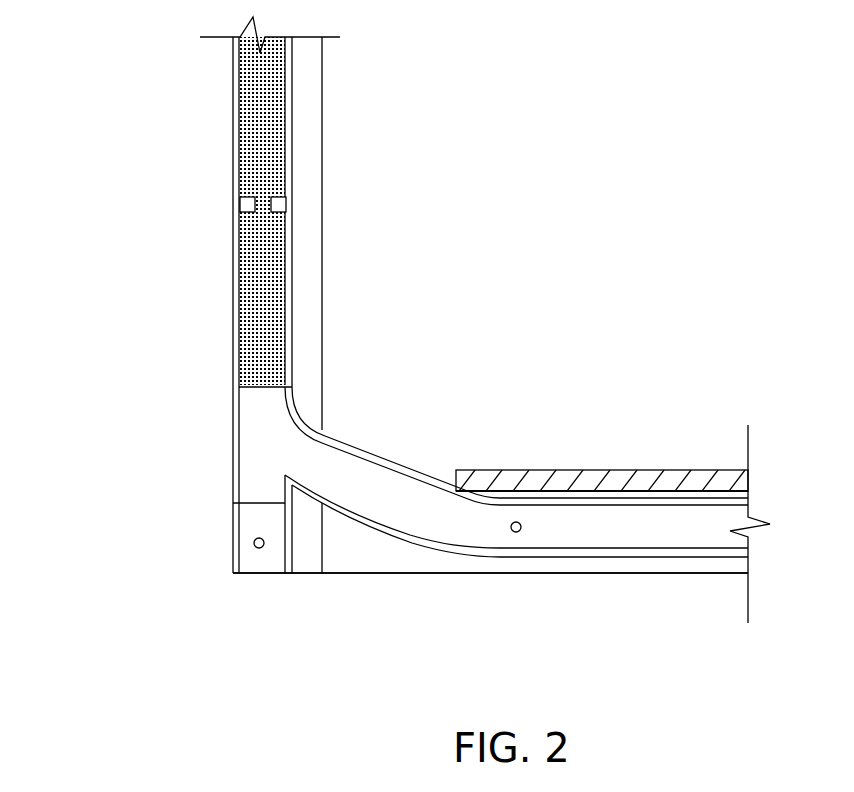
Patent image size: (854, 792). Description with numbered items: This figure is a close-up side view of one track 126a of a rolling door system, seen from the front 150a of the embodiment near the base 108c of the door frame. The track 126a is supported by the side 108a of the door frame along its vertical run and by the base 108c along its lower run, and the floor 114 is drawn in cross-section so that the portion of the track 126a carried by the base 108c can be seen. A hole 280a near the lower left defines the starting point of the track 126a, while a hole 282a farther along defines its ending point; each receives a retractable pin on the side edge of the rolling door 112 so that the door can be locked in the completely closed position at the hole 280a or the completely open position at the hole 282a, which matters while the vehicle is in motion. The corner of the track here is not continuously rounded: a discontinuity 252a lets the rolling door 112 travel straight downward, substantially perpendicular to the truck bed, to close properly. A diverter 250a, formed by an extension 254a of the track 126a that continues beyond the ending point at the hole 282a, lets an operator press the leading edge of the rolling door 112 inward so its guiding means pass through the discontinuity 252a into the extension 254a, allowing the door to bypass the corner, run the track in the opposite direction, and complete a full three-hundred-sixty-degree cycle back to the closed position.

The front 150a is at (160, 298).
The side of the door frame 108a is at (318, 168).
The base 108c is at (368, 562).
The rolling door 112 is at (262, 142).
The track 126a is at (241, 232).
The diverter 250a is at (435, 348).
The discontinuity 252a is at (265, 452).
The extension 254a is at (367, 478).
The floor 114 is at (587, 472).
The hole 280a is at (258, 550).
The hole 282a is at (511, 533).